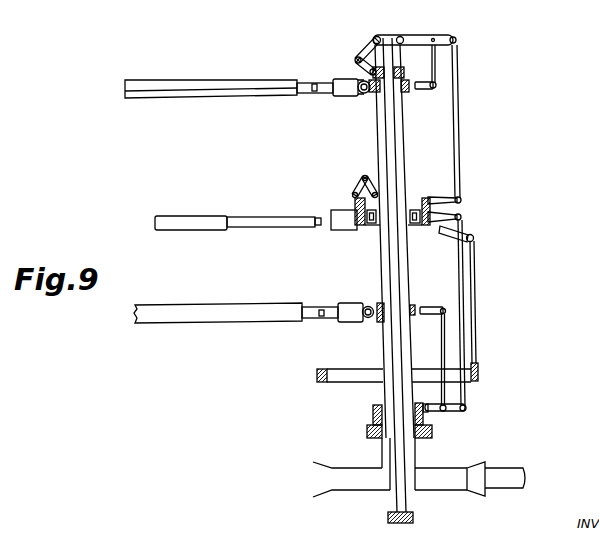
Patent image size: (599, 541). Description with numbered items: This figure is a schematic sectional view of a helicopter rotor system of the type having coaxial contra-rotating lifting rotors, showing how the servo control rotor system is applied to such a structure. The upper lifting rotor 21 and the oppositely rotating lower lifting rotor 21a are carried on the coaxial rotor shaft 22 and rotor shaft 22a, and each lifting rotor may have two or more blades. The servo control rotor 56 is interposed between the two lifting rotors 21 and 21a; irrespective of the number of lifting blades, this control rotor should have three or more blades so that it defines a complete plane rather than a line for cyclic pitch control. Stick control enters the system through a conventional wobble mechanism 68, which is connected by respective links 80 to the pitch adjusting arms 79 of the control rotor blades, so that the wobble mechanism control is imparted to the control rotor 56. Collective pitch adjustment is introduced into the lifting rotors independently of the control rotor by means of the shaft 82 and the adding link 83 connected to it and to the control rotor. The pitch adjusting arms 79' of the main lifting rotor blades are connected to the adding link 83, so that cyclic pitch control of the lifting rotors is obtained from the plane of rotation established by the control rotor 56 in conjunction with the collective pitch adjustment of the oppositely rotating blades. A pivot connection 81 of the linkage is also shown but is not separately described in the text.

The lifting rotor 21 is at (217, 80).
The lifting rotor 21a is at (247, 306).
The rotor shaft 22 is at (408, 168).
The rotor shaft 22a is at (418, 457).
The servo control rotor 56 is at (215, 196).
The wobble mechanism 68 is at (479, 381).
The pitch adjusting arm 79 is at (400, 211).
The pitch adjusting arm 79' is at (316, 67).
The link 80 is at (477, 314).
The pivot link 81 is at (362, 228).
The shaft 82 is at (394, 138).
The adding link 83 is at (428, 36).